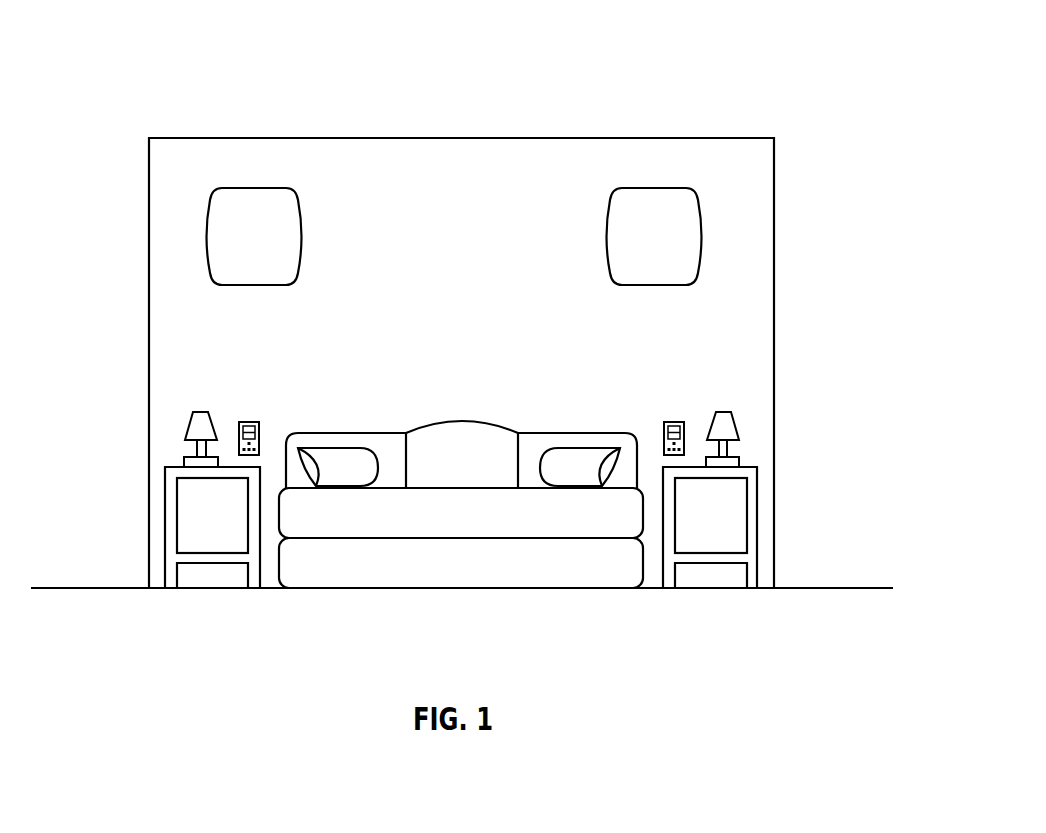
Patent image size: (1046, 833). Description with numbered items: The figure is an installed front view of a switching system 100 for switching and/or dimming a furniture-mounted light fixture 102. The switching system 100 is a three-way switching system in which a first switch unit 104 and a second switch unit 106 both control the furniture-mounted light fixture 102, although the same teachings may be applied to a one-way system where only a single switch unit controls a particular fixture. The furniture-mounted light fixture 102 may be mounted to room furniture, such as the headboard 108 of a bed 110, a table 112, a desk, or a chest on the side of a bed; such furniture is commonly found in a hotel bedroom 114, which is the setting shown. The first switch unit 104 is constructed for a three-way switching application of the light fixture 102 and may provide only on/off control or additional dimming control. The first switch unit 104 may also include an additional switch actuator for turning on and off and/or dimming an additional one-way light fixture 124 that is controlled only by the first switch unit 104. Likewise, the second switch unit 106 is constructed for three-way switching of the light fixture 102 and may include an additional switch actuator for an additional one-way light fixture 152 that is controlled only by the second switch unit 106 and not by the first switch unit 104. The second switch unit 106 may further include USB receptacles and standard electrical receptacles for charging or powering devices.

The switching system 100 is at (797, 44).
The furniture-mounted light fixture 102 is at (302, 237).
The first switch unit 104 is at (250, 422).
The second switch unit 106 is at (672, 422).
The headboard 108 is at (702, 136).
The bed 110 is at (643, 568).
The table 112 is at (165, 518).
The hotel bedroom 114 is at (849, 380).
The additional one-way light fixture 124 is at (200, 412).
The additional one-way light fixture 152 is at (722, 412).